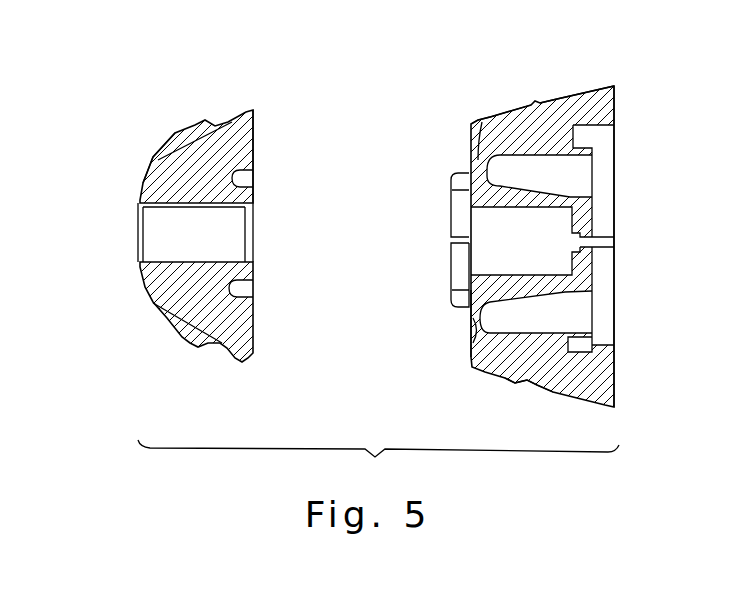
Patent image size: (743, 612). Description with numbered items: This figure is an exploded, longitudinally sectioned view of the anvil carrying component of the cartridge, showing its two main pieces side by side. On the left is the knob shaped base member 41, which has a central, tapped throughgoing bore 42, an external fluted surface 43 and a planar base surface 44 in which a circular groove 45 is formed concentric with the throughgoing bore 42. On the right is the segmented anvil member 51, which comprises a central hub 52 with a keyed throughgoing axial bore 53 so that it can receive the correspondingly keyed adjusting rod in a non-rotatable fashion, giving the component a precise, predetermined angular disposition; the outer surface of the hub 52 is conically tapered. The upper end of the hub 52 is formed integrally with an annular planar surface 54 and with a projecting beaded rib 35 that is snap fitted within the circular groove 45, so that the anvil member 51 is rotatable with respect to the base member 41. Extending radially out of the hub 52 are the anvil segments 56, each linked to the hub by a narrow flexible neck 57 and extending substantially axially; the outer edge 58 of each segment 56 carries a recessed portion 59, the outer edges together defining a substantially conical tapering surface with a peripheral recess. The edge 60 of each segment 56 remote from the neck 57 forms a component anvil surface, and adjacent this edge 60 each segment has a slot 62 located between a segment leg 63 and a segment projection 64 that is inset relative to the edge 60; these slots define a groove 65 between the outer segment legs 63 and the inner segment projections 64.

The beaded rib 35 is at (460, 178).
The base member 41 is at (175, 341).
The throughgoing bore 42 is at (170, 232).
The fluted surface 43 is at (192, 137).
The planar base surface 44 is at (257, 133).
The circular groove 45 is at (243, 178).
The anvil member 51 is at (533, 101).
The hub 52 is at (572, 193).
The axial bore 53 is at (533, 238).
The annular planar surface 54 is at (472, 307).
The anvil segment 56 is at (556, 104).
The flexible neck 57 is at (475, 336).
The outer edge 58 is at (497, 113).
The recessed portion 59 is at (586, 96).
The edge 60 is at (616, 102).
The slot 62 is at (588, 137).
The segment leg 63 is at (553, 380).
The segment projection 64 is at (588, 343).
The groove 65 is at (578, 352).